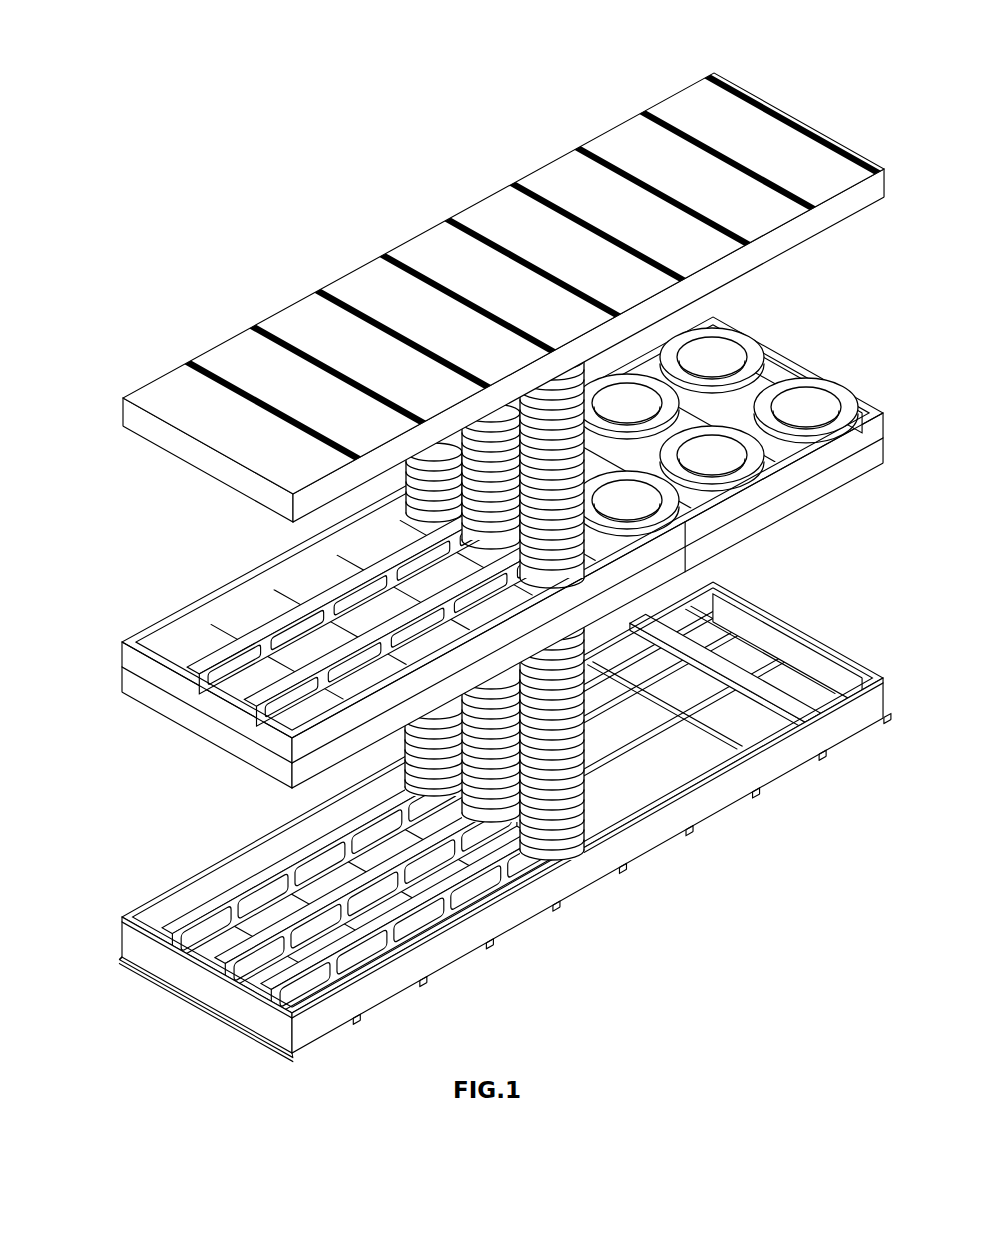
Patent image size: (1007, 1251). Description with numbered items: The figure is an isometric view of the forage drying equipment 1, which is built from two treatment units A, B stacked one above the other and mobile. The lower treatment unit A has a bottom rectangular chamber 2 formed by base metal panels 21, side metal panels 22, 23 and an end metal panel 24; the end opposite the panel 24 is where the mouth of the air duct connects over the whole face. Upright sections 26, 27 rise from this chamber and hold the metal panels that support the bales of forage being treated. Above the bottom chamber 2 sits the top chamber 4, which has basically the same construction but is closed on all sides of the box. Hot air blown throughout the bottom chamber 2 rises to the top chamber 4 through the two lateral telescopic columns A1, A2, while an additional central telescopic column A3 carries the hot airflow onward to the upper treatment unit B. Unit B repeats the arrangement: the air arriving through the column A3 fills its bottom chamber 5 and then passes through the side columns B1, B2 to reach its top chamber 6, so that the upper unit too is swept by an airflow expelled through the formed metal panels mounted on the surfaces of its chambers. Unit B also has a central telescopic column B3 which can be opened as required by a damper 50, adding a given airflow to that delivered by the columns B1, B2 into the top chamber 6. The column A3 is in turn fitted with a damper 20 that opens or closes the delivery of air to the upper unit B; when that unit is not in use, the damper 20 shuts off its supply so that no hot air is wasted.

The drying equipment 1 is at (470, 555).
The bottom rectangular chamber 2 is at (505, 845).
The top chamber 4 is at (242, 745).
The bottom chamber 5 is at (502, 555).
The top chamber 6 is at (210, 460).
The damper 20 is at (500, 740).
The base metal panels 21 is at (263, 896).
The side metal panel 22 is at (313, 861).
The side metal panel 23 is at (591, 866).
The end metal panel 24 is at (205, 989).
The upright section 26 is at (366, 891).
The upright section 27 is at (373, 875).
The damper 50 is at (478, 469).
The treatment unit A is at (470, 845).
The treatment unit B is at (474, 555).
The lateral telescopic column A1 is at (416, 748).
The lateral telescopic column A2 is at (588, 828).
The central telescopic column A3 is at (498, 803).
The side column B1 is at (417, 482).
The side column B2 is at (716, 456).
The central telescopic column B3 is at (478, 540).